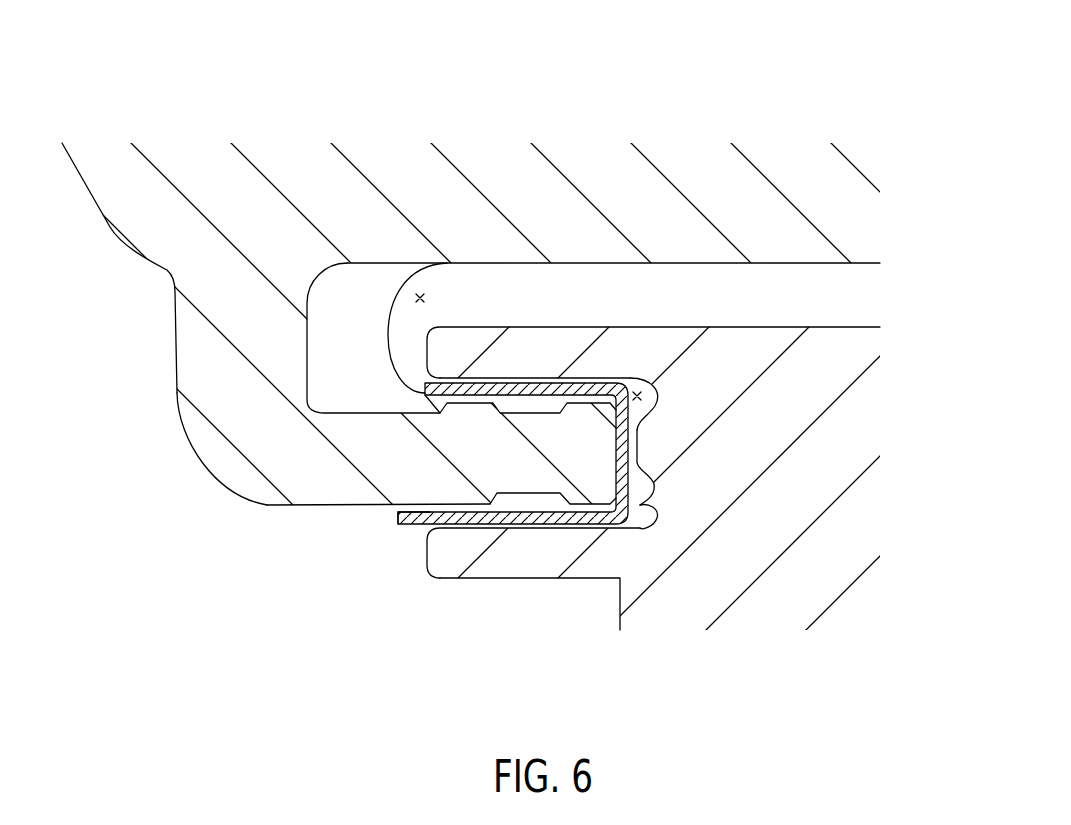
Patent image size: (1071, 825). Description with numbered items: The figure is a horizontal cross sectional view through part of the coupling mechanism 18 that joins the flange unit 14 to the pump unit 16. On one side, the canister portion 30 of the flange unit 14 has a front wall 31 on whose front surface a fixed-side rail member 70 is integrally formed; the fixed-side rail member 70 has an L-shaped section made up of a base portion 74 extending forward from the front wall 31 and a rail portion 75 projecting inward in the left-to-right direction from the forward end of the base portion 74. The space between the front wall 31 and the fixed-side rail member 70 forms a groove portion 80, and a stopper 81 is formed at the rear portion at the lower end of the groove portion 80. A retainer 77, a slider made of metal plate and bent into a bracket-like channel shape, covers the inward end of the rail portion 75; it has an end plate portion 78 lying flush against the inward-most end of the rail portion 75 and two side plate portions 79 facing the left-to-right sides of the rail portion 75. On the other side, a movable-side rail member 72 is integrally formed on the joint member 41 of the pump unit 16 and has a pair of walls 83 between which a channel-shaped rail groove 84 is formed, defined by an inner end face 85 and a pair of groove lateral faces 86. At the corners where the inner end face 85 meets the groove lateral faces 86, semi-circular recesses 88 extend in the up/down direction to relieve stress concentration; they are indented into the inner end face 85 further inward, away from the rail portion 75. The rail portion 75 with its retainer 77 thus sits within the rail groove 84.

The flange unit 14 is at (471, 357).
The pump unit 16 is at (662, 385).
The coupling mechanism 18 is at (231, 549).
The canister portion 30 is at (471, 356).
The front wall 31 is at (843, 190).
The joint member 41 is at (662, 398).
The fixed-side rail member 70 is at (194, 473).
The movable-side rail member 72 is at (485, 592).
The base portion 74 is at (207, 358).
The rail portion 75 is at (528, 473).
The retainer 77 is at (411, 531).
The end plate portion 78 is at (633, 379).
The side plate portion 79 is at (473, 385).
The groove portion 80 is at (420, 297).
The stopper 81 is at (337, 303).
The wall 83 is at (523, 350).
The rail groove 84 is at (637, 394).
The inner end face 85 is at (655, 492).
The groove lateral face 86 is at (572, 383).
The recess 88 is at (653, 401).